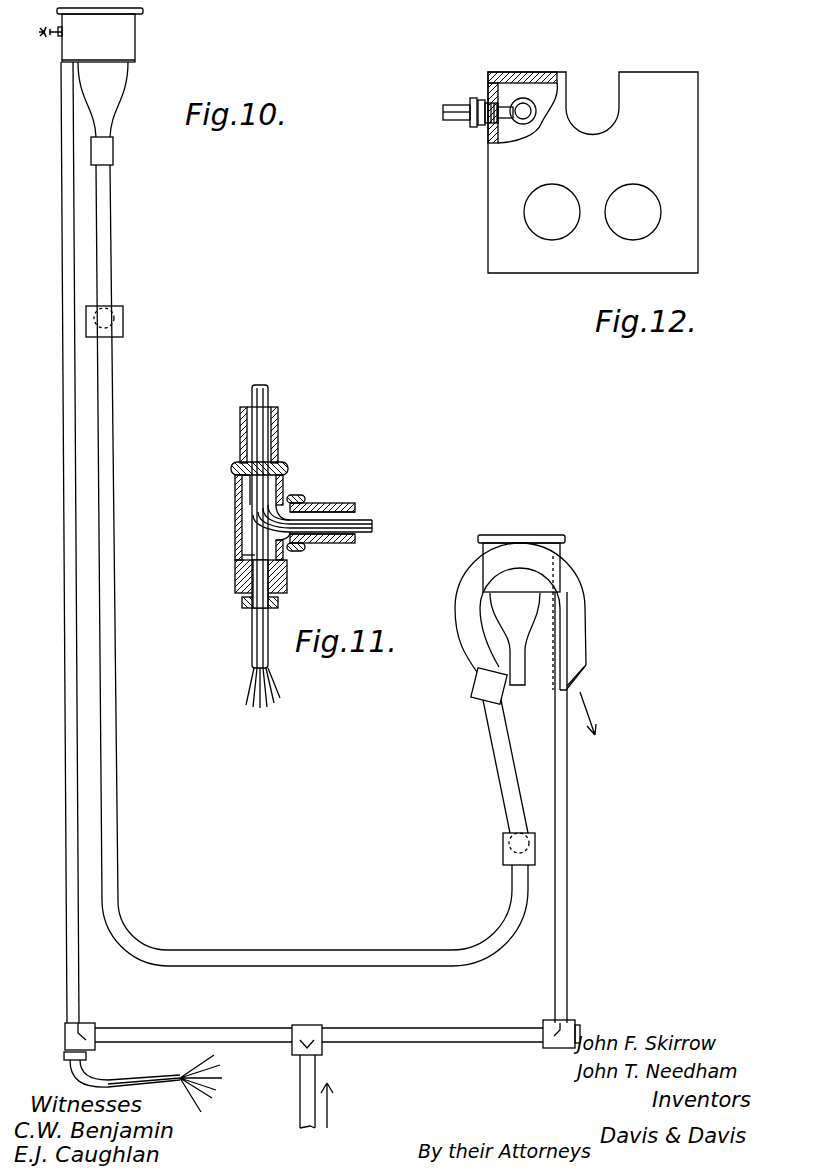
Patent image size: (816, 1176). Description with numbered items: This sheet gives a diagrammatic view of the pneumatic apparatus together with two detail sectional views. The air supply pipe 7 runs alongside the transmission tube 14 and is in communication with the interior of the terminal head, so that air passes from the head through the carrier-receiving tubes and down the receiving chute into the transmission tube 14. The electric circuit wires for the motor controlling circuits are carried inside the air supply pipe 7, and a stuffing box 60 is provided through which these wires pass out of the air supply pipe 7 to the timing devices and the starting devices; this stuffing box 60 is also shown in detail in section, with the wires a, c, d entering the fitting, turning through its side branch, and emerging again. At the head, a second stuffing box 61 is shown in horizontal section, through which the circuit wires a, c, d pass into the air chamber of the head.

In FIG. 10, the air supply pipe 7 is at (66, 646).
In FIG. 12, the air supply pipe 7 is at (531, 124).
In FIG. 10, the transmission tube 14 is at (110, 655).
In FIG. 10, the stuffing box 60 is at (55, 1055).
In FIG. 11, the stuffing box 60 is at (233, 603).
In FIG. 12, the stuffing box 61 is at (473, 90).
In FIG. 11, the conductor a is at (255, 386).
In FIG. 12, the conductor a is at (443, 113).
In FIG. 11, the conductor c is at (256, 386).
In FIG. 12, the conductor c is at (443, 113).
In FIG. 11, the conductor d is at (257, 386).
In FIG. 12, the conductor d is at (443, 113).